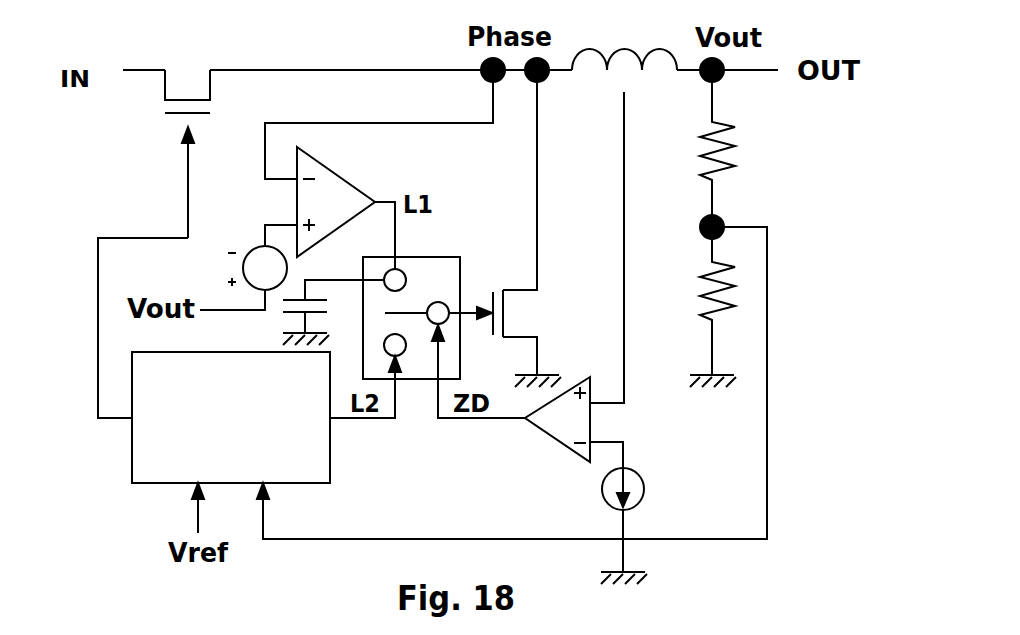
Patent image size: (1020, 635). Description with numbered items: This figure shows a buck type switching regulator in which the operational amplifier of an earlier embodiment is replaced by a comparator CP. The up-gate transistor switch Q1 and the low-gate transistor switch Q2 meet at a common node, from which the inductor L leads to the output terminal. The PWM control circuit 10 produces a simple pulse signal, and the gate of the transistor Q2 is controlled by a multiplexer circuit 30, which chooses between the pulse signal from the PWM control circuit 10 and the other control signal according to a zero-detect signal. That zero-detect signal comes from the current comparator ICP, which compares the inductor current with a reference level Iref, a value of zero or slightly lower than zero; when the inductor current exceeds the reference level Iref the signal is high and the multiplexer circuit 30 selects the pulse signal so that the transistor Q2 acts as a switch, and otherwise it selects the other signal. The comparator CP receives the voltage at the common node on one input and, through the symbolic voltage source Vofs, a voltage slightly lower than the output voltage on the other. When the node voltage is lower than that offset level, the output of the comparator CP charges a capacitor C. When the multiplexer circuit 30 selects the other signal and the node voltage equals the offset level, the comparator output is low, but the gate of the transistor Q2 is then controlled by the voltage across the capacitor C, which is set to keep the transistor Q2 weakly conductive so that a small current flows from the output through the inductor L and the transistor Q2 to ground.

The PWM control circuit 10 is at (231, 417).
The multiplexer circuit 30 is at (462, 267).
The up-gate transistor switch Q1 is at (187, 74).
The low-gate transistor switch Q2 is at (534, 338).
The inductor L is at (624, 38).
The capacitor C is at (333, 312).
The comparator CP is at (336, 202).
The current comparator ICP is at (557, 419).
The reference level Iref is at (646, 489).
The voltage source Vofs is at (243, 251).